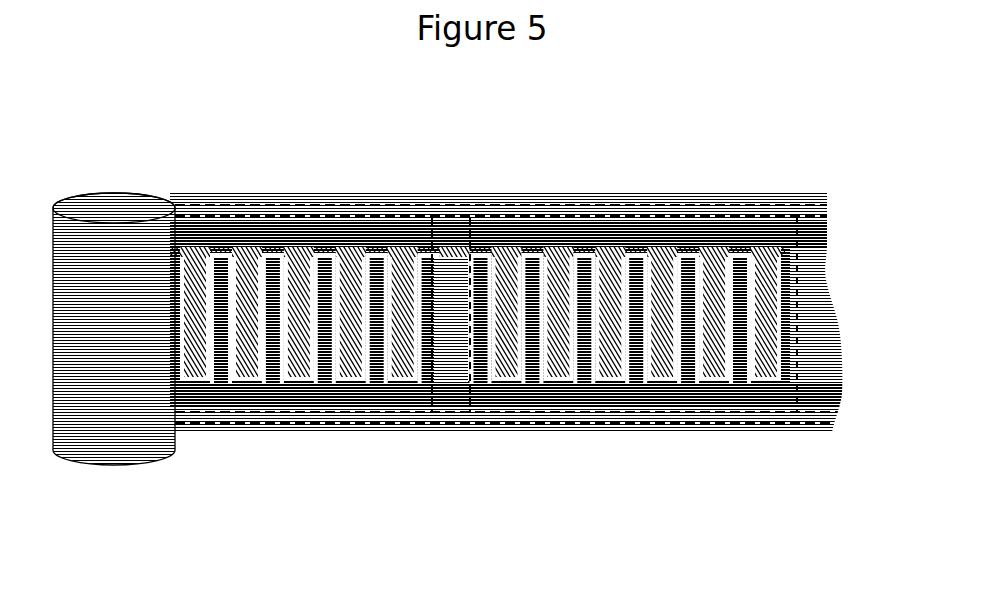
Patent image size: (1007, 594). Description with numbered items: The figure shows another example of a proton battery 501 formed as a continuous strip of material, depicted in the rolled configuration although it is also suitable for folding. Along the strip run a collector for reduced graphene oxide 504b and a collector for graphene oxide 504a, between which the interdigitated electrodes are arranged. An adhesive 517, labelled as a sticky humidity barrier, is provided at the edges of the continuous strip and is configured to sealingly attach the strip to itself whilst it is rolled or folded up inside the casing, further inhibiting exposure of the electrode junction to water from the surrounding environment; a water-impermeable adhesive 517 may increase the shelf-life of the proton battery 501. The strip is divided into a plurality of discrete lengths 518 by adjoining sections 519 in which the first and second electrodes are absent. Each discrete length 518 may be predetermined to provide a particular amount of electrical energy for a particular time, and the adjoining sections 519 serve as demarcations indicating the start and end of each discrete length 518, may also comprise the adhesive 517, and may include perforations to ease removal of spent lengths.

The proton battery 501 is at (249, 329).
The adhesive 517 is at (443, 265).
The collector for GO 504a is at (683, 402).
The collector for rGO 504b is at (693, 232).
The discrete lengths 518 is at (820, 510).
The adjoining sections 519 is at (818, 337).